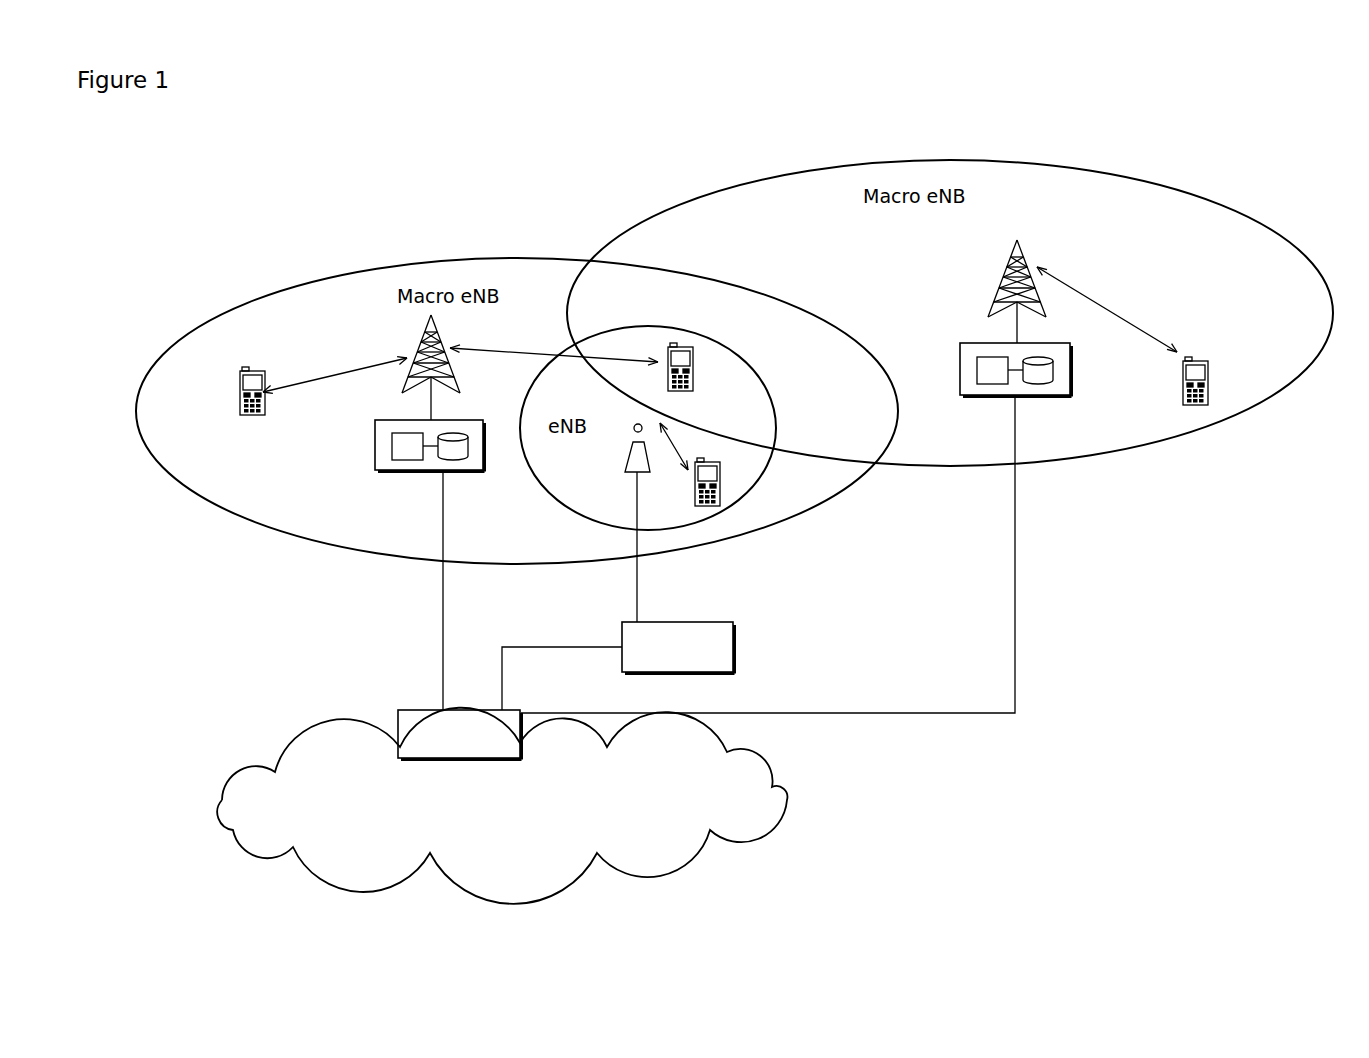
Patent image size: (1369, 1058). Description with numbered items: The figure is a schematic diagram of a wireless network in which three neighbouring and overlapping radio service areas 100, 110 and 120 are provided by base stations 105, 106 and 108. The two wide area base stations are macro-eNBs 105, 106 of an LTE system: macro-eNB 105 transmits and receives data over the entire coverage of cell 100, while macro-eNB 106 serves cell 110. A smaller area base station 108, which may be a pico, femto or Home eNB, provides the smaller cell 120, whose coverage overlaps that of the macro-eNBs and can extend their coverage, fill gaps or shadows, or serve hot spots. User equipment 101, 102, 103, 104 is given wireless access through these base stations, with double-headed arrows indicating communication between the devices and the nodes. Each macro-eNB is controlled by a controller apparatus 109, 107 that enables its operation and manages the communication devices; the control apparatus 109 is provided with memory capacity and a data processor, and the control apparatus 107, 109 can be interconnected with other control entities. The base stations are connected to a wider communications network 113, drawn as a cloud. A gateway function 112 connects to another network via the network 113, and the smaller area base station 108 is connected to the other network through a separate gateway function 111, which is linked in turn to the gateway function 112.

The radio service area 100 is at (242, 303).
The radio service area 110 is at (718, 188).
The radio service area 120 is at (812, 369).
The user equipment 101 is at (245, 417).
The user equipment 102 is at (1207, 380).
The user equipment 103 is at (720, 490).
The user equipment 104 is at (690, 345).
The wide area base station 105 is at (418, 340).
The wide area base station 106 is at (1005, 266).
The controller apparatus 107 is at (960, 348).
The smaller area base station 108 is at (625, 450).
The controller apparatus 109 is at (375, 450).
The separate gateway function 111 is at (735, 645).
The gateway function 112 is at (398, 735).
The wider communications network 113 is at (792, 800).